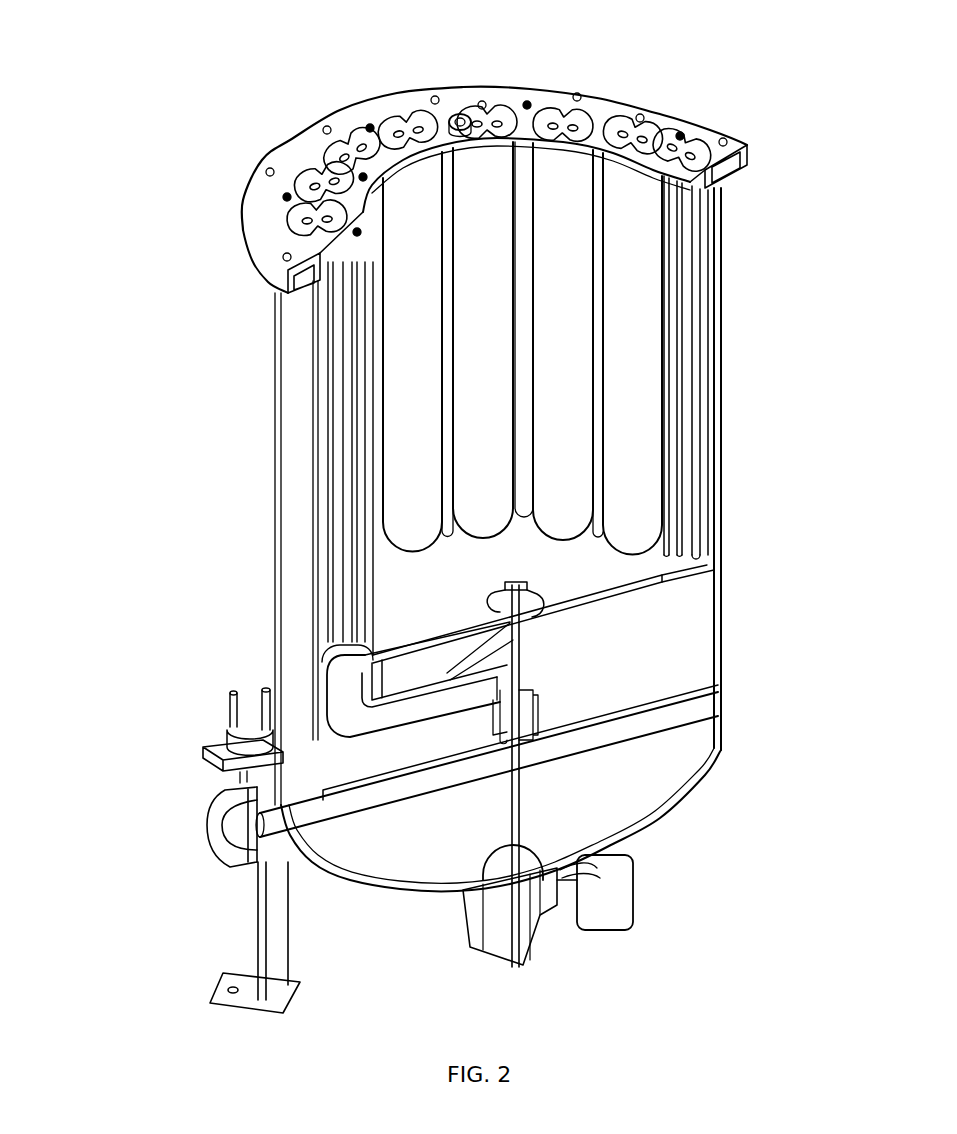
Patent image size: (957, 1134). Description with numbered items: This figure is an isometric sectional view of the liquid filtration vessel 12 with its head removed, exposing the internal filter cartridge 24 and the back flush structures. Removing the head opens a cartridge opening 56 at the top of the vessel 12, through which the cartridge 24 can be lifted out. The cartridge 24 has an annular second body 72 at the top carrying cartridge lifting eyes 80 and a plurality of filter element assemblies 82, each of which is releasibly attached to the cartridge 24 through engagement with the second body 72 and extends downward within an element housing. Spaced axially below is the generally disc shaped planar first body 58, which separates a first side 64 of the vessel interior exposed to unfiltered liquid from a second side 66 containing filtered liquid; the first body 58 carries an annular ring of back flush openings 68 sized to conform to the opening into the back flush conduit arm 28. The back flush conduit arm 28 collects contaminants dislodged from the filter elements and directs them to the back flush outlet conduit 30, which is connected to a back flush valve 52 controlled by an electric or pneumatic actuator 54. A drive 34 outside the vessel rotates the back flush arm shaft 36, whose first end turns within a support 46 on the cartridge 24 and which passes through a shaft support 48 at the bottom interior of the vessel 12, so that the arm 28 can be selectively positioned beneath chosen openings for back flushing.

The filter vessel 12 is at (723, 665).
The filter cartridge 24 is at (607, 118).
The back flush conduit arm 28 is at (380, 730).
The back flush outlet conduit 30 is at (654, 737).
The drive 34 is at (620, 907).
The back flush arm shaft 36 is at (520, 802).
The support 46 is at (522, 581).
The shaft support 48 is at (525, 846).
The back flush valve 52 is at (210, 770).
The actuator 54 is at (232, 700).
The cartridge opening 56 is at (290, 115).
The first body 58 is at (428, 609).
The first side 64 is at (677, 640).
The second side 66 is at (710, 430).
The back flush openings 68 is at (683, 568).
The second body 72 is at (677, 140).
The cartridge lifting eyes 80 is at (461, 110).
The filter element assemblies 82 is at (492, 110).